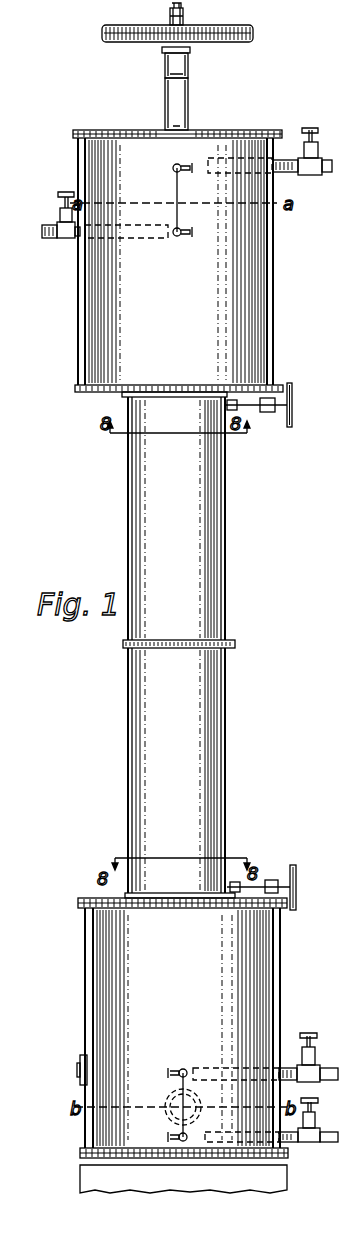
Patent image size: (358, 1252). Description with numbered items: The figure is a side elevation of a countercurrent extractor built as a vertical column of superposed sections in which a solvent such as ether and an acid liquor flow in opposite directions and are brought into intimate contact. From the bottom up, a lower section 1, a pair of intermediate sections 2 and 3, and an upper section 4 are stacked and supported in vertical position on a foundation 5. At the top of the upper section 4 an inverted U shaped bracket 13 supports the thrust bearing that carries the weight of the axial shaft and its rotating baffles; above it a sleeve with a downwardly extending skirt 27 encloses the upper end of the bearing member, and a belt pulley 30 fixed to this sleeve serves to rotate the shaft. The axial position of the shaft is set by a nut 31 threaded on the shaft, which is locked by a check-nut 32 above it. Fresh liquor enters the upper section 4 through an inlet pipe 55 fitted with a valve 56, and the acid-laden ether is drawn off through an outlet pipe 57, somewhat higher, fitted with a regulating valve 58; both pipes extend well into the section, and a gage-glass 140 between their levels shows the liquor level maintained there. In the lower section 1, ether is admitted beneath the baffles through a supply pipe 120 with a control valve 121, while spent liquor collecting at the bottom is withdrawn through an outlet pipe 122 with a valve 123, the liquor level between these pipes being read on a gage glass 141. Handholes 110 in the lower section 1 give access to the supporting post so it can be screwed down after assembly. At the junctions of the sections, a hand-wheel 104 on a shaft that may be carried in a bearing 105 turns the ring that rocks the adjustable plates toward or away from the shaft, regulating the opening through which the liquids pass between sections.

The lower section 1 is at (258, 990).
The intermediate section 2 is at (217, 768).
The intermediate section 3 is at (215, 540).
The upper section 4 is at (258, 288).
The foundation 5 is at (268, 1180).
The inverted U shaped bracket 13 is at (188, 104).
The skirt 27 is at (190, 49).
The belt pulley 30 is at (100, 34).
The nut 31 is at (168, 13).
The check-nut 32 is at (184, 13).
The inlet pipe 55 is at (78, 240).
The valve 56 is at (58, 212).
The outlet pipe 57 is at (288, 158).
The regulating valve 58 is at (310, 176).
The hand-wheel 104 is at (290, 382).
The bearing 105 is at (270, 412).
The handholes 110 is at (168, 1115).
The supply pipe 120 is at (285, 1068).
The control valve 121 is at (313, 1050).
The outlet pipe 122 is at (290, 1142).
The valve 123 is at (318, 1122).
The gage-glass 140 is at (344, 468).
The gage glass 141 is at (172, 1078).